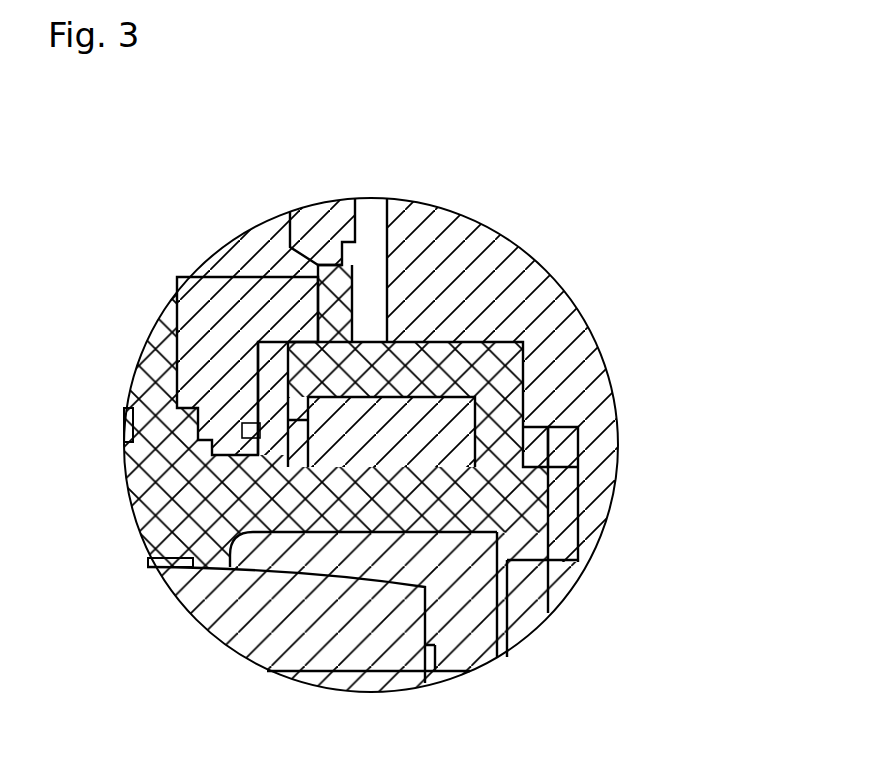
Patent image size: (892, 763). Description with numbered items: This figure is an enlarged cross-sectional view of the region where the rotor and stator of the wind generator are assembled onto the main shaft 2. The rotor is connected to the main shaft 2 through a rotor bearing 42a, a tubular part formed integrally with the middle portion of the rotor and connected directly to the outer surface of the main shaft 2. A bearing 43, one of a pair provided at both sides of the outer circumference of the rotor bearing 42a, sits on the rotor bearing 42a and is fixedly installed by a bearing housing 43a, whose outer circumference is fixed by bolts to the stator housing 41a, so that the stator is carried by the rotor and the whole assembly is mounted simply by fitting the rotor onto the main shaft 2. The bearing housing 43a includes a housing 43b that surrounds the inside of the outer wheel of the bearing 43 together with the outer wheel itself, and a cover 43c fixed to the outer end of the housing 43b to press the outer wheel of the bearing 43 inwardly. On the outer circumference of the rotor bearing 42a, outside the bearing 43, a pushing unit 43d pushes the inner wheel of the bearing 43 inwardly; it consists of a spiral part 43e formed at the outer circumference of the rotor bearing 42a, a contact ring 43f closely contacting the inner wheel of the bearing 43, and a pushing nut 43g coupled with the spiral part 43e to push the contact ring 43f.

The main shaft 2 is at (372, 622).
The stator housing 41a is at (368, 255).
The rotor bearing 42a is at (497, 497).
The bearing 43 is at (448, 433).
The bearing housing 43a is at (455, 360).
The housing 43b is at (205, 307).
The cover 43c is at (555, 357).
The pushing unit 43d is at (495, 453).
The spiral part 43e is at (540, 442).
The contact ring 43f is at (277, 363).
The pushing nut 43g is at (552, 462).